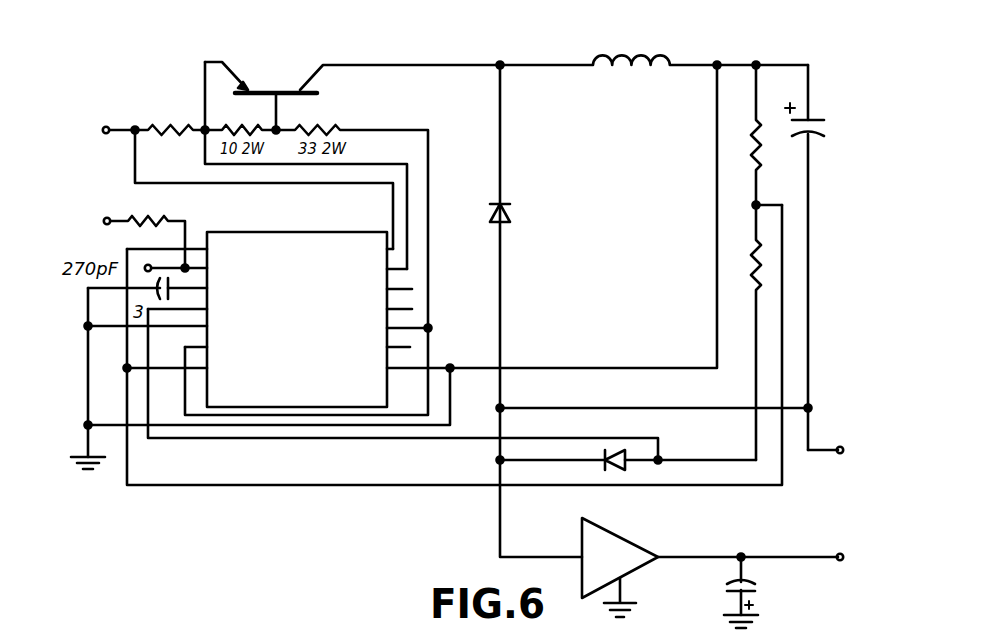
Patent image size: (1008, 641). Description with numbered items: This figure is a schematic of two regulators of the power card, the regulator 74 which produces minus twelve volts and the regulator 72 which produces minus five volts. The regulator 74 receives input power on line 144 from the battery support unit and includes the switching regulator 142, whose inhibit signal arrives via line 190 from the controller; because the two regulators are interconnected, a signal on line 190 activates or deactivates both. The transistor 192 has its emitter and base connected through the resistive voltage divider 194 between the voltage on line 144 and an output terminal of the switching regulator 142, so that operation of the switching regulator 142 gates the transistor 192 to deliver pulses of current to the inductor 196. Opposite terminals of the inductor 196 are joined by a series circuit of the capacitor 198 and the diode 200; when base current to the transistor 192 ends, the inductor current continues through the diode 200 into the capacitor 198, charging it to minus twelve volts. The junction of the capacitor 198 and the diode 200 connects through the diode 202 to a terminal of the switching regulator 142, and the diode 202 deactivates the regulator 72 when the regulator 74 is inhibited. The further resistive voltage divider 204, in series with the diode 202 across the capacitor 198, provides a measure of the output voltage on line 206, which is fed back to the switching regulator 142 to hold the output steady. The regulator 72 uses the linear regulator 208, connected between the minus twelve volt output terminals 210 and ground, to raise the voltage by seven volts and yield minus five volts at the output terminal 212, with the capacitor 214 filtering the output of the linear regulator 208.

The line 144 is at (122, 129).
The resistive voltage divider 194 is at (229, 109).
The transistor 192 is at (305, 96).
The switching regulator 142 is at (287, 232).
The line 190 is at (146, 266).
The inductor 196 is at (630, 55).
The diode 200 is at (505, 203).
The resistive voltage divider 204 is at (748, 196).
The capacitor 198 is at (813, 136).
The output terminals 210 is at (814, 428).
The diode 202 is at (625, 465).
The line 206 is at (245, 484).
The regulator 74 is at (196, 486).
The linear regulator 208 is at (581, 530).
The regulator 72 is at (693, 541).
The capacitor 214 is at (737, 587).
The output terminal 212 is at (822, 558).